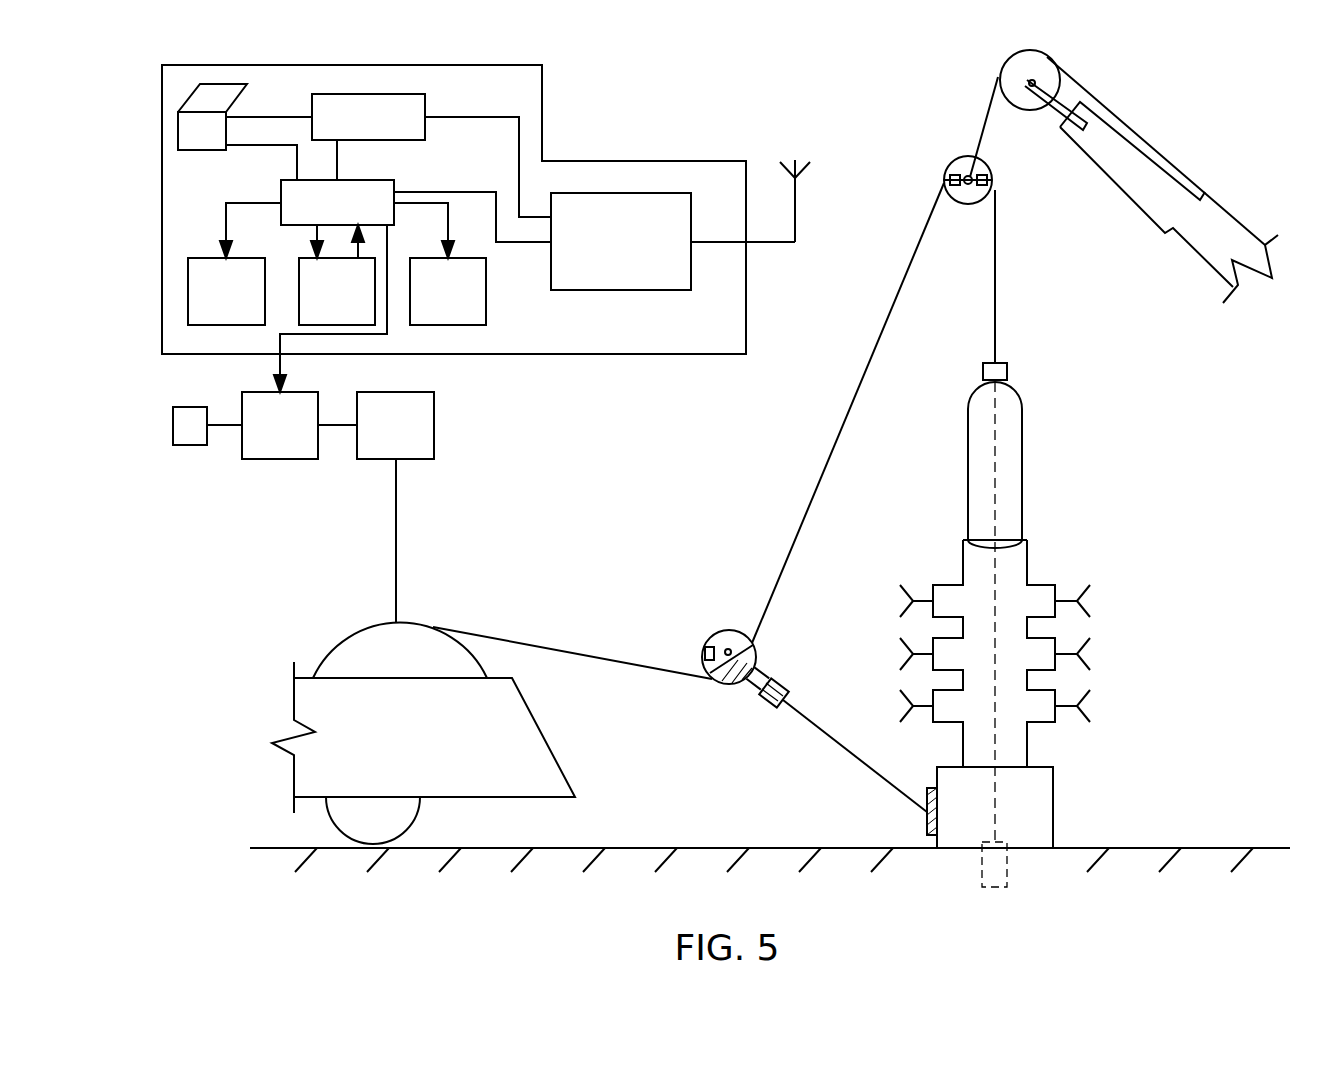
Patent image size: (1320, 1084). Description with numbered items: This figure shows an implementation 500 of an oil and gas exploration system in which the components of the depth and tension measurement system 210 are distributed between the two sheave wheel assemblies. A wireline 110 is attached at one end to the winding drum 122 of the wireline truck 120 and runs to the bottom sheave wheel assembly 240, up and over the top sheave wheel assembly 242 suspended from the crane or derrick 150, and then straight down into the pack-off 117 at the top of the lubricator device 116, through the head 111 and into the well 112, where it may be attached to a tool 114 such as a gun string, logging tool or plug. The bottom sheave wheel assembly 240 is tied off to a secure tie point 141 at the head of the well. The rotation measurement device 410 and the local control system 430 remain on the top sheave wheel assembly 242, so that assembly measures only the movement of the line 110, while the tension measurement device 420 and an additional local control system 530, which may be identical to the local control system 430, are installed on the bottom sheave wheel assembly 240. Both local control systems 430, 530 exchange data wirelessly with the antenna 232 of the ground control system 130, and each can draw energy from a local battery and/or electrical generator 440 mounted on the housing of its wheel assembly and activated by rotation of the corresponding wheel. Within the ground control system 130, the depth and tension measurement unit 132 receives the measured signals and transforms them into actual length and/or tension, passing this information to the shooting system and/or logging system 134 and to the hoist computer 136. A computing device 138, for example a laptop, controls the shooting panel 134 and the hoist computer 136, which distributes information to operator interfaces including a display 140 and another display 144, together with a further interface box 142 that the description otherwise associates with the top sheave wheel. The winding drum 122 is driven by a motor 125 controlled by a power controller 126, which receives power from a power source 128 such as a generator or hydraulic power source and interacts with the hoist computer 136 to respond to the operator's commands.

The wireline 110 is at (995, 270).
The head 111 is at (1055, 636).
The well 112 is at (1053, 808).
The tool 114 is at (1007, 887).
The lubricator device 116 is at (1022, 473).
The pack-off 117 is at (1007, 372).
The wireline truck 120 is at (282, 762).
The winding drum 122 is at (363, 625).
The motor 125 is at (395, 425).
The power controller 126 is at (299, 425).
The power source 128 is at (190, 445).
The ground control system 130 is at (542, 115).
The depth and tension measurement unit 132 is at (673, 241).
The shooting system and/or logging system 134 is at (431, 155).
The hoist computer 136 is at (385, 286).
The computing device 138 is at (185, 97).
The display 140 is at (226, 291).
The secure tie point 141 is at (927, 815).
The top sheave wheel 142 is at (337, 291).
The display 144 is at (448, 291).
The crane 150 is at (1192, 140).
The depth and tension measurement system 210 is at (1240, 458).
The antenna 232 is at (795, 210).
The bottom sheave wheel assembly 240 is at (731, 630).
The top sheave wheel assembly 242 is at (960, 195).
The rotation measurement device 410 is at (944, 180).
The tension measurement device 420 is at (750, 698).
The local control system 430 is at (992, 180).
The local battery and/or electrical generator 440 is at (705, 640).
The system 500 is at (848, 125).
The additional local control system 530 is at (790, 666).